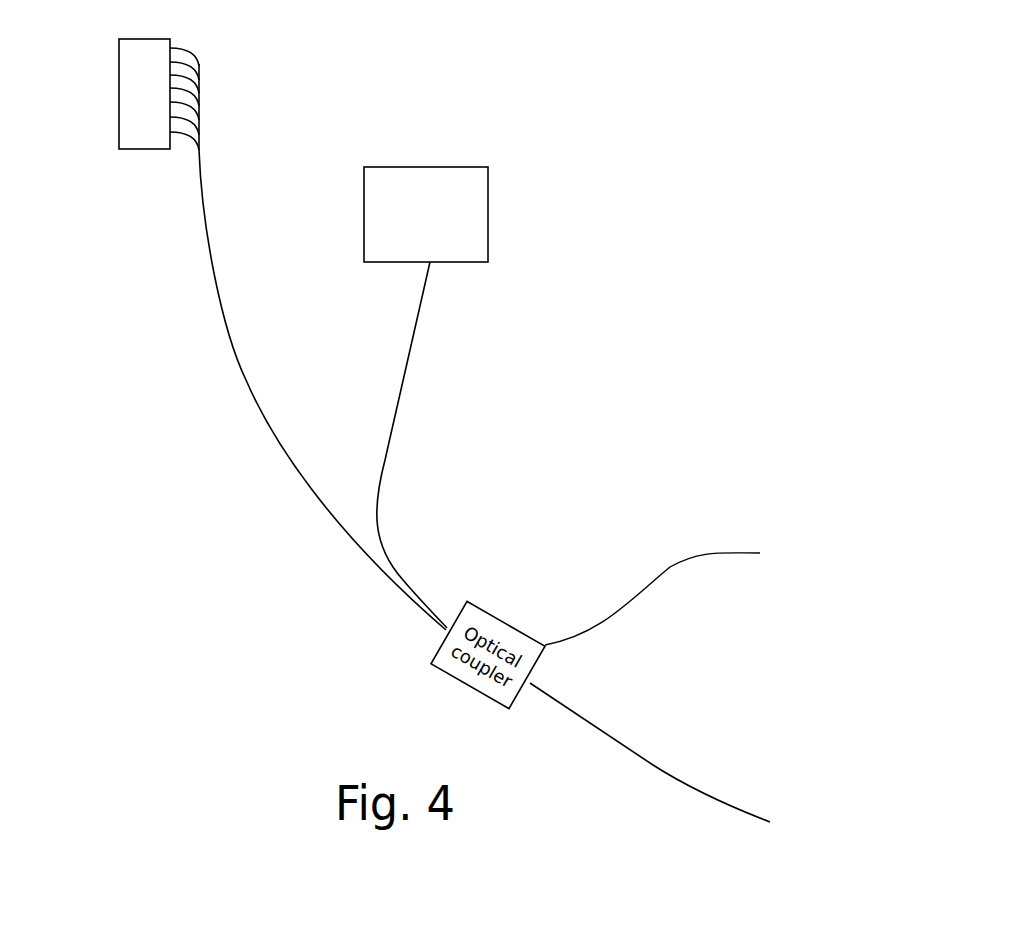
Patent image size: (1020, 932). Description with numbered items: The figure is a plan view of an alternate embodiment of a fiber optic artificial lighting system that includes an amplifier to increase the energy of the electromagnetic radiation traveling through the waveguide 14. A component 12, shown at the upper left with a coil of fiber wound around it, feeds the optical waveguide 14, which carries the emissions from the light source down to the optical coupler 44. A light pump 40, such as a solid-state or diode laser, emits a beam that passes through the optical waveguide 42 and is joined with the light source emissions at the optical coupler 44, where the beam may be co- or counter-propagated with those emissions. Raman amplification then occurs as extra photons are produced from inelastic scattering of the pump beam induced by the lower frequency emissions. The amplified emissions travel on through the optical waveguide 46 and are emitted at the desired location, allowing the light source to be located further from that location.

The sensing element with fiber coil 12 is at (133, 74).
The optical waveguide 14 is at (247, 382).
The light pump 40 is at (488, 204).
The optical waveguide 42 is at (400, 387).
The optical coupler 44 is at (667, 592).
The optical waveguide 46 is at (653, 765).